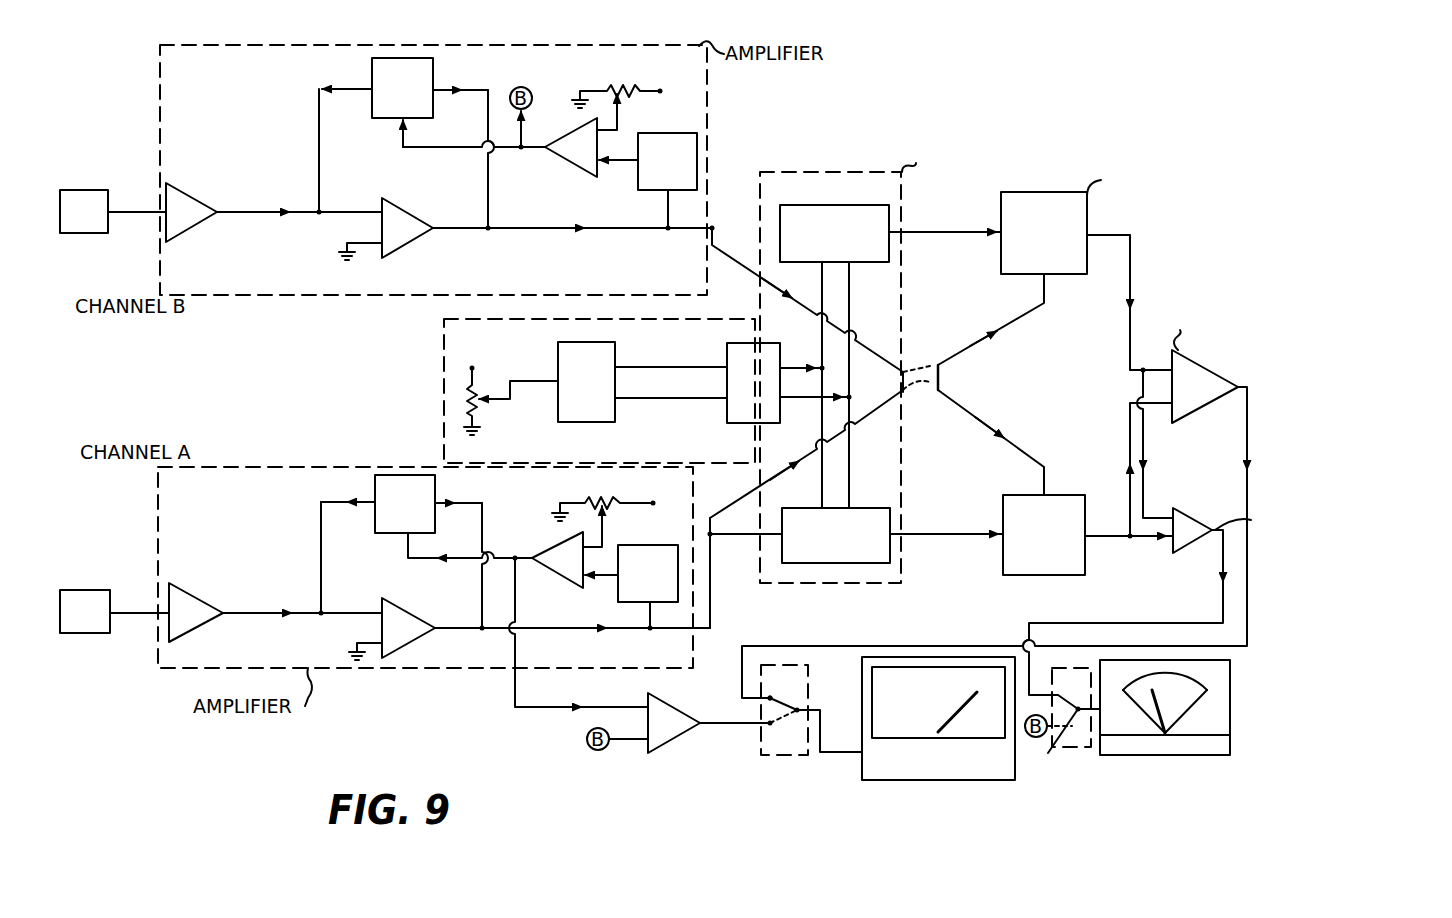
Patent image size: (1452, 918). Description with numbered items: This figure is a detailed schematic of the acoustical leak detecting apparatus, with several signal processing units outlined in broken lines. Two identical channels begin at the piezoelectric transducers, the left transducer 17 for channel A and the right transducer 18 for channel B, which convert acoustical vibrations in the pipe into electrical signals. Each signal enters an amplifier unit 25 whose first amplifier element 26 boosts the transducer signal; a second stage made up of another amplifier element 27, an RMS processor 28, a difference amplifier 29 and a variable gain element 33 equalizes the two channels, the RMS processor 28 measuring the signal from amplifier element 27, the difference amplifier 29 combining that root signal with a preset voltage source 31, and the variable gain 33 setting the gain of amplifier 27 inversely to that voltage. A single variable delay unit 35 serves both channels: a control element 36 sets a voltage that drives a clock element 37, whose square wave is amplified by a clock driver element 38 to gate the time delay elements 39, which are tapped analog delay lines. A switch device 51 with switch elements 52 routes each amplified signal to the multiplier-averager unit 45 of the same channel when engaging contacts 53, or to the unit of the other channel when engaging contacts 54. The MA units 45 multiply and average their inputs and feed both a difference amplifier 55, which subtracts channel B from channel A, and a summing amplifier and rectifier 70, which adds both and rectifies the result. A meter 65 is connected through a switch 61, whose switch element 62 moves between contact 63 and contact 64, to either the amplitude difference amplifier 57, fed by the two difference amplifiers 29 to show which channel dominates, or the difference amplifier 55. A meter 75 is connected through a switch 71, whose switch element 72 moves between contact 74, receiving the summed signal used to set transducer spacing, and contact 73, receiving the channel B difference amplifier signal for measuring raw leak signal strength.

The left transducer 17 is at (111, 591).
The right transducer 18 is at (98, 192).
The amplifier unit 25 is at (707, 112).
The first amplifier element 26 is at (200, 222).
The second stage amplifier element 27 is at (415, 239).
The RMS processor 28 is at (682, 172).
The difference amplifier 29 is at (591, 157).
The preset voltage source 31 is at (648, 93).
The variable gain element 33 is at (417, 99).
The variable delay unit 35 is at (790, 172).
The control element 36 is at (490, 366).
The clock element 37 is at (601, 393).
The clock driver element 38 is at (768, 394).
The time delay element 39 is at (849, 244).
The multiplier-averager unit 45 is at (1058, 244).
The switch device 51 is at (955, 384).
The switch element 52 is at (902, 400).
The contact 53 is at (928, 372).
The contact 54 is at (916, 398).
The difference amplifier 55 is at (1217, 397).
The amplitude difference amplifier 57 is at (687, 734).
The switch 61 is at (791, 725).
The switch element 62 is at (798, 708).
The switch contact 63 is at (770, 724).
The contact 64 is at (770, 698).
The meter 65 is at (925, 783).
The summing amplifier and rectifier 70 is at (1179, 513).
The switch 71 is at (1074, 726).
The switch element 72 is at (1068, 721).
The contact 73 is at (1088, 766).
The contact 74 is at (1060, 685).
The meter 75 is at (1230, 722).